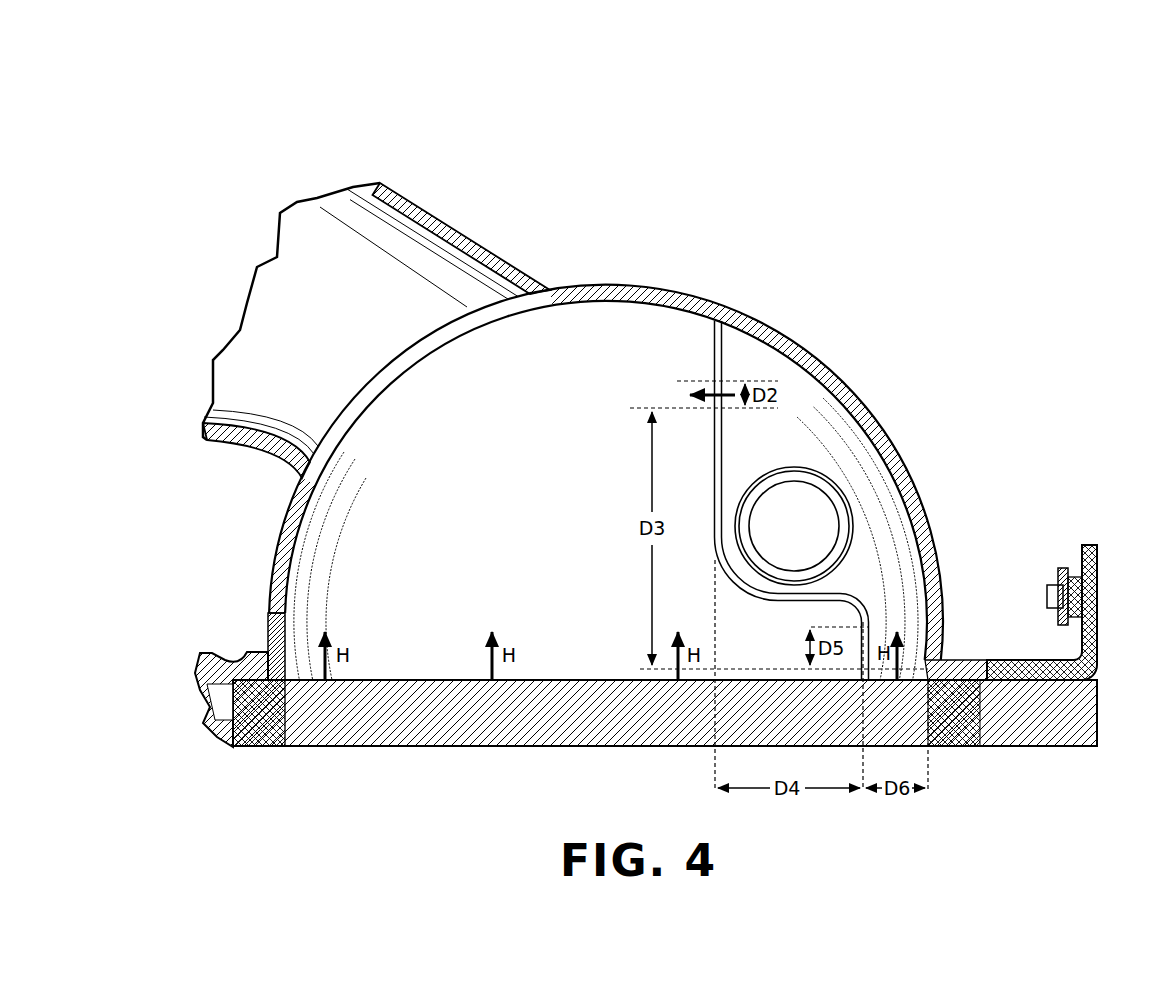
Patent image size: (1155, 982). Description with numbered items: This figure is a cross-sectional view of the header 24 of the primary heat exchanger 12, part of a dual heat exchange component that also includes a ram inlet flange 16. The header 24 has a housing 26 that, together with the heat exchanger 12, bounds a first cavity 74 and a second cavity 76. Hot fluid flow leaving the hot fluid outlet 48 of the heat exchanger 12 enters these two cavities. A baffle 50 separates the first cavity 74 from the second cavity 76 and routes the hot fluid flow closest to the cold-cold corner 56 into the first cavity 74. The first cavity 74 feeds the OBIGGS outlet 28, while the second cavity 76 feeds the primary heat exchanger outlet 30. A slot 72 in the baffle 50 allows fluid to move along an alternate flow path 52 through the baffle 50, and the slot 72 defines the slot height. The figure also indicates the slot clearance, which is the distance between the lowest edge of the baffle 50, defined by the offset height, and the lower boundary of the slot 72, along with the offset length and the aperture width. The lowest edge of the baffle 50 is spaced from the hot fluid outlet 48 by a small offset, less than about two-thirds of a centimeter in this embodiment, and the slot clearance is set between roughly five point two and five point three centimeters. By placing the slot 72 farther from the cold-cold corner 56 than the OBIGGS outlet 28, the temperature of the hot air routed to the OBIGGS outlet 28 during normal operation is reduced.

The primary heat exchanger 12 is at (387, 718).
The ram inlet flange 16 is at (1098, 594).
The header 24 is at (556, 170).
The housing 26 is at (285, 527).
The OBIGGS outlet 28 is at (794, 526).
The primary heat exchanger outlet 30 is at (376, 330).
The hot fluid outlet 48 is at (343, 685).
The baffle 50 is at (733, 323).
The alternate flow path 52 is at (702, 388).
The cold-cold corner 56 is at (929, 682).
The slot 72 is at (720, 378).
The first cavity 74 is at (836, 440).
The second cavity 76 is at (609, 345).